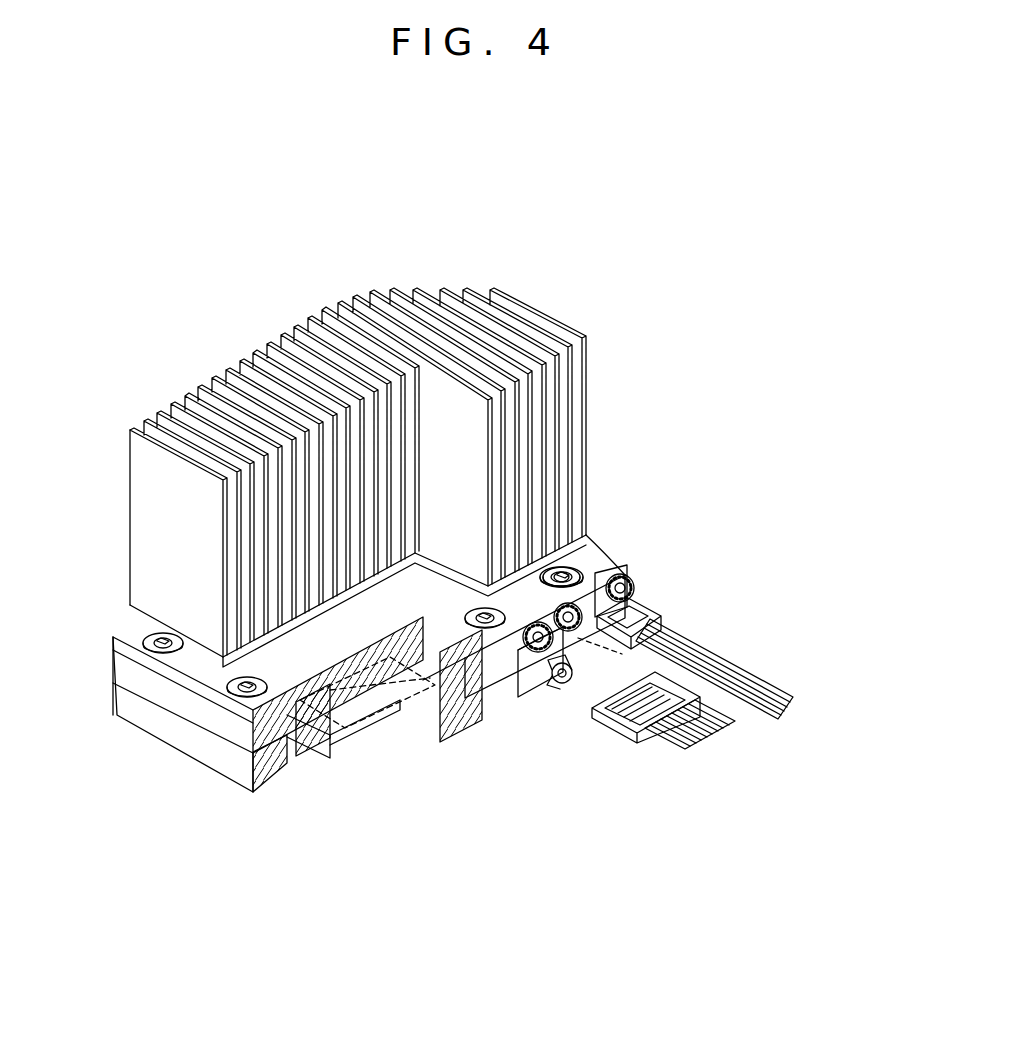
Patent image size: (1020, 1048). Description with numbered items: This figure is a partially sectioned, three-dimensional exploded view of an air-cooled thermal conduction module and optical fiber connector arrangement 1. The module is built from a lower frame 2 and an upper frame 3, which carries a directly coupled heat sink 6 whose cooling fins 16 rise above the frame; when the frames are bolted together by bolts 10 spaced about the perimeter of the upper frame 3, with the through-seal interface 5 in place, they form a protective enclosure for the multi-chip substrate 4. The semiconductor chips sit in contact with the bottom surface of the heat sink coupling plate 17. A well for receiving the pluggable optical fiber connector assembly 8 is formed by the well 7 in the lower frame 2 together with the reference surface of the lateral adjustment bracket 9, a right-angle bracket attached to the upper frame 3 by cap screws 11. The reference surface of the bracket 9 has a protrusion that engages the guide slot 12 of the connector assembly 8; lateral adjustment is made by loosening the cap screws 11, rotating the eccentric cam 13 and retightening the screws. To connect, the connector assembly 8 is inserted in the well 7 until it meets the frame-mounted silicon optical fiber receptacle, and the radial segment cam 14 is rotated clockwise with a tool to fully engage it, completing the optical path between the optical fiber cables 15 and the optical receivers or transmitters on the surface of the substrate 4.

The semiconductor module assembly 1 is at (610, 520).
The lower frame 2 is at (273, 783).
The upper frame 3 is at (230, 722).
The substrate 4 is at (305, 763).
The through-seal interface 5 is at (318, 745).
The heat sink 6 is at (345, 707).
The well 7 is at (510, 606).
The pluggable optical fiber connector assembly 8 is at (657, 618).
The lateral adjustment bracket 9 is at (622, 570).
The bolts 10 is at (245, 680).
The cap screws 11 is at (637, 580).
The guide slot 12 is at (700, 643).
The eccentric cam 13 is at (565, 640).
The radial segment cam 14 is at (556, 690).
The optical fiber cables 15 is at (777, 712).
The cooling fins 16 is at (590, 383).
The heat sink coupling plate 17 is at (318, 722).